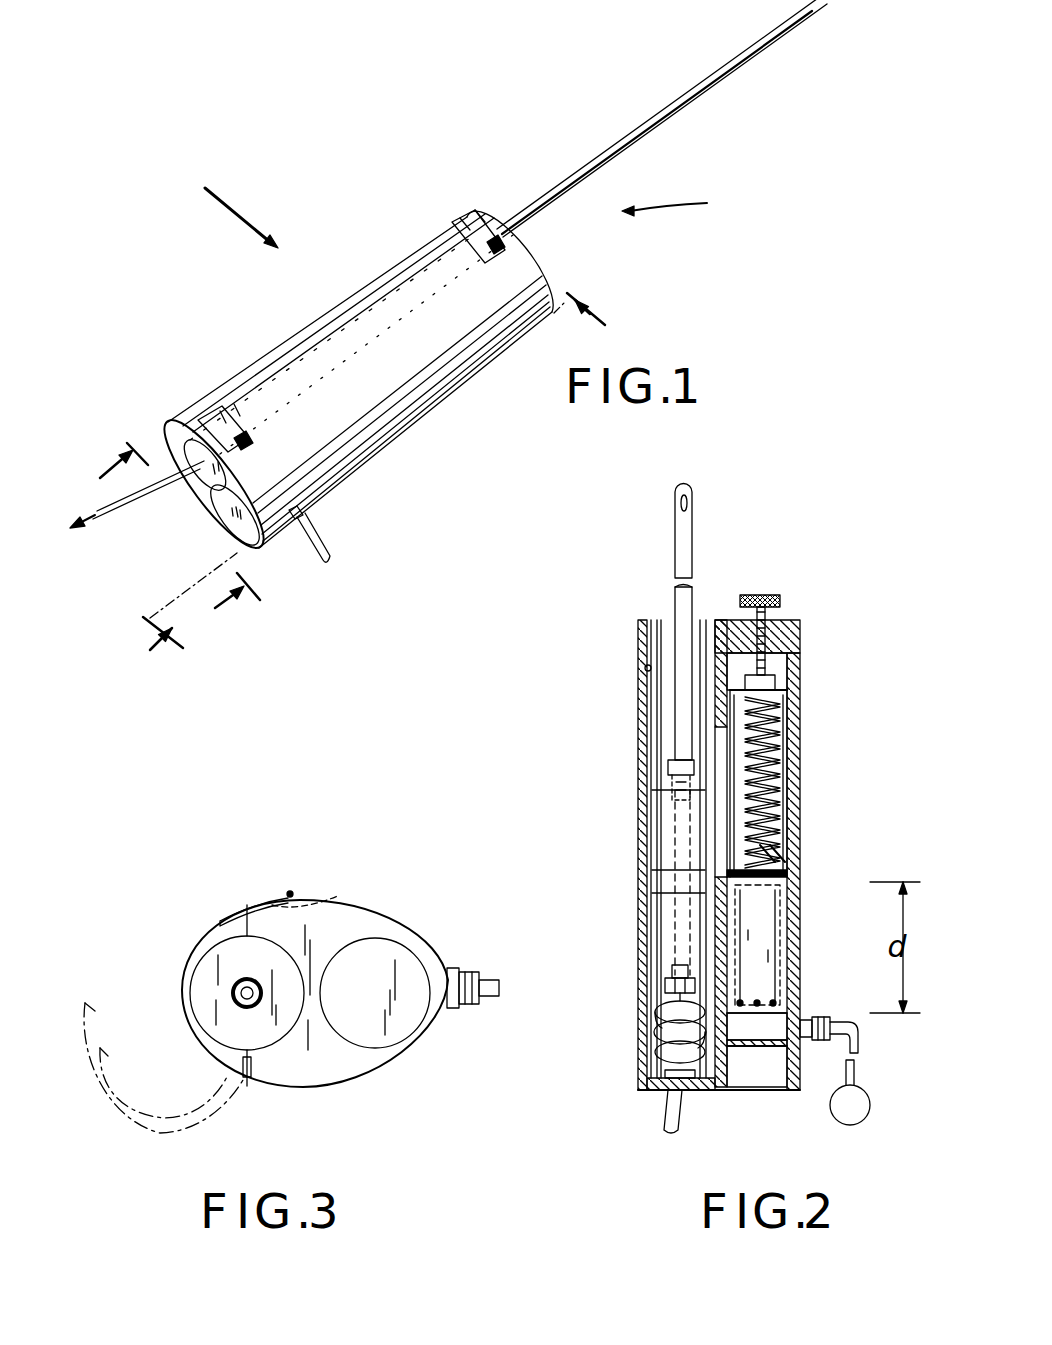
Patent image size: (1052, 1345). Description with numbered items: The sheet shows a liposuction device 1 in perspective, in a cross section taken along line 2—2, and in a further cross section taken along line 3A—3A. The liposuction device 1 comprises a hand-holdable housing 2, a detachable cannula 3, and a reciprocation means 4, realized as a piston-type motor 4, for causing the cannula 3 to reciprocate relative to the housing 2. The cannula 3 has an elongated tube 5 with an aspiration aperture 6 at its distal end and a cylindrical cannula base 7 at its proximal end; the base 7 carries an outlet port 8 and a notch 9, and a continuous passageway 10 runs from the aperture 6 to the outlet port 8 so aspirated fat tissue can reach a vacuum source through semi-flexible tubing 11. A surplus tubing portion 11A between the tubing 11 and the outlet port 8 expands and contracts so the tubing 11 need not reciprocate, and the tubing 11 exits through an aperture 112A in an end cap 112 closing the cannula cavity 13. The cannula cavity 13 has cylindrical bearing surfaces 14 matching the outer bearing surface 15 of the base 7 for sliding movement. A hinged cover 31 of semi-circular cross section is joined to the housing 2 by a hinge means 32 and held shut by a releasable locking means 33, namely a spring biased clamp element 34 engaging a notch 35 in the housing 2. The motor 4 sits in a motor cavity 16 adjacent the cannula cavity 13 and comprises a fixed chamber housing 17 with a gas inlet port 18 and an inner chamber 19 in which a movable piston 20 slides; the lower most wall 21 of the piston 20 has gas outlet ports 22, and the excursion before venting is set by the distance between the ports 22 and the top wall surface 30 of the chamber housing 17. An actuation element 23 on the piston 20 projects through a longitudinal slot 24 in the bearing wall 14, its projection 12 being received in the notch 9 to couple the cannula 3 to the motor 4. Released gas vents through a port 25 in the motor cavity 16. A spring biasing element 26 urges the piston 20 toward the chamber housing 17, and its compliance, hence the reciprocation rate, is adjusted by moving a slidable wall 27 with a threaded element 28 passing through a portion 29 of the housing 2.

In FIG. 1, the liposuction device 1 is at (225, 204).
In FIG. 2, the liposuction device 1 is at (815, 546).
In FIG. 1, the hand-holdable housing 2 is at (415, 445).
In FIG. 2, the hand-holdable housing 2 is at (592, 702).
In FIG. 3, the hand-holdable housing 2 is at (157, 943).
In FIG. 1, the detachable cannula 3 is at (680, 201).
In FIG. 1, the section line for the cross-sectional view 3A is at (165, 539).
In FIG. 2, the reciprocation means 4 is at (785, 860).
In FIG. 1, the elongated tube 5 is at (645, 120).
In FIG. 2, the elongated tube 5 is at (675, 602).
In FIG. 1, the aspiration aperture 6 is at (857, 0).
In FIG. 2, the aspiration aperture 6 is at (692, 506).
In FIG. 2, the cannula base 7 is at (657, 805).
In FIG. 2, the outlet port 8 is at (665, 985).
In FIG. 2, the notch 9 is at (700, 894).
In FIG. 2, the continuous passageway 10 is at (655, 847).
In FIG. 1, the tubing 11 is at (117, 513).
In FIG. 2, the tubing 11 is at (668, 1108).
In FIG. 2, the surplus tubing portion 11A is at (655, 1030).
In FIG. 2, the projection of actuation element 12 is at (700, 870).
In FIG. 2, the cannula cavity 13 is at (660, 733).
In FIG. 2, the bearing surfaces 14 is at (648, 668).
In FIG. 2, the outer bearing surface 15 is at (645, 826).
In FIG. 2, the motor cavity 16 is at (783, 842).
In FIG. 2, the chamber housing 17 is at (757, 1013).
In FIG. 1, the gas inlet port 18 is at (300, 515).
In FIG. 2, the gas inlet port 18 is at (808, 1018).
In FIG. 3, the gas inlet port 18 is at (455, 1015).
In FIG. 2, the inner chamber 19 is at (760, 958).
In FIG. 2, the movable piston 20 is at (792, 883).
In FIG. 2, the lower most wall 21 is at (750, 1013).
In FIG. 2, the gas outlet ports 22 is at (773, 1003).
In FIG. 2, the actuation element 23 is at (782, 875).
In FIG. 2, the longitudinally disposed slot 24 is at (720, 782).
In FIG. 2, the ventilation port 25 is at (800, 812).
In FIG. 2, the spring biasing element 26 is at (775, 740).
In FIG. 2, the slidable wall 27 is at (795, 672).
In FIG. 2, the threaded element 28 is at (775, 617).
In FIG. 2, the housing portion 29 is at (800, 634).
In FIG. 2, the top wall surface 30 is at (795, 932).
In FIG. 1, the hinged cover 31 is at (381, 290).
In FIG. 3, the hinged cover 31 is at (205, 936).
In FIG. 3, the hinge means 32 is at (252, 1085).
In FIG. 1, the releasable locking means 33 is at (482, 225).
In FIG. 3, the releasable locking means 33 is at (262, 890).
In FIG. 1, the spring biased clamp element 34 is at (468, 248).
In FIG. 3, the spring biased clamp element 34 is at (272, 897).
In FIG. 3, the notch 35 is at (338, 895).
In FIG. 2, the end cap 112 is at (645, 1083).
In FIG. 2, the aperture 112A is at (668, 1090).